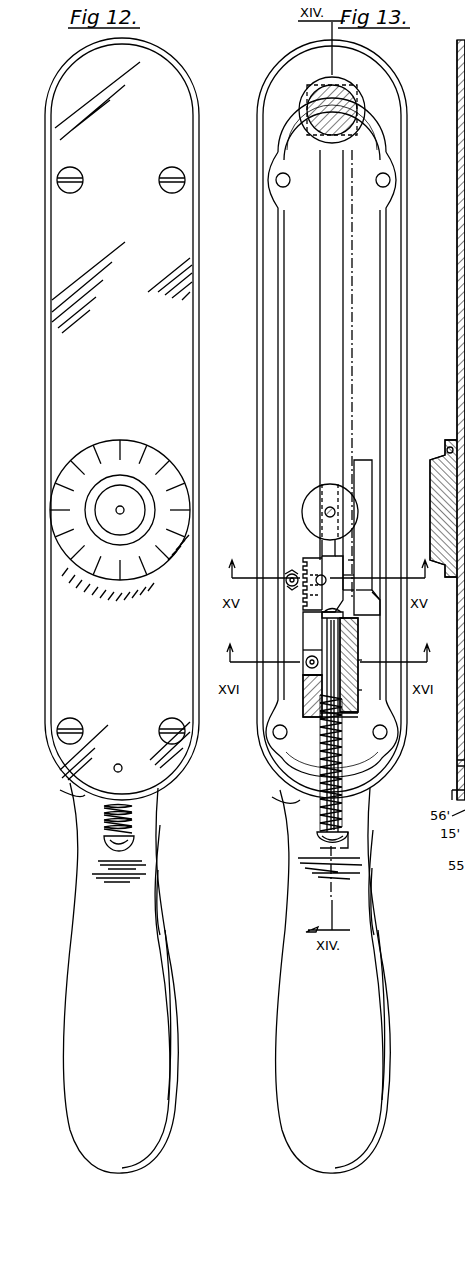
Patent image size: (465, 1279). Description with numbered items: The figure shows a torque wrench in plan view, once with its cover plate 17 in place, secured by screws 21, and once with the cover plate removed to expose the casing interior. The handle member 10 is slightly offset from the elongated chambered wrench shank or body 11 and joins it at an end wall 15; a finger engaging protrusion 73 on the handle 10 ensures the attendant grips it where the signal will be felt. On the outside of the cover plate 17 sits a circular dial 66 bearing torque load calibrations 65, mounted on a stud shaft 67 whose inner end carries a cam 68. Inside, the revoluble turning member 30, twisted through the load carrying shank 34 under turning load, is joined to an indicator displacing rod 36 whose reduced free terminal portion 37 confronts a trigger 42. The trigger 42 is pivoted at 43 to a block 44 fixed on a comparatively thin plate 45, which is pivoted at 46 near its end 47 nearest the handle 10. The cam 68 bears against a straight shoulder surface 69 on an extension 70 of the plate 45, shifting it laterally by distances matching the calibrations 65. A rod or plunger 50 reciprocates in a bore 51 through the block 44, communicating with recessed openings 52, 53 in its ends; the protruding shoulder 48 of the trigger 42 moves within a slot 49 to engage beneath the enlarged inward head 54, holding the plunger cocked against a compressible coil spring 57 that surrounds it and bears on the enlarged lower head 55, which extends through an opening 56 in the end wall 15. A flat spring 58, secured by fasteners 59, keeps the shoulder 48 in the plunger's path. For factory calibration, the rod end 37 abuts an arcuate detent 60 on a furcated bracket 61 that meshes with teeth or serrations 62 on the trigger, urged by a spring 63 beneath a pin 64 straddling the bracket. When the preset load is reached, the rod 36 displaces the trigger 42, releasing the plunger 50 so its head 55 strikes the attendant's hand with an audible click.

In FIG. 12, the handle member 10 is at (60, 966).
In FIG. 13, the handle member 10 is at (266, 1000).
In FIG. 13, the elongated chambered wrench shank or body 11 is at (232, 367).
In FIG. 12, the end wall 15 is at (82, 798).
In FIG. 13, the end wall 15 is at (300, 800).
In FIG. 12, the cover plate 17 is at (172, 315).
In FIG. 13, the cover plate 17 is at (457, 252).
In FIG. 12, the screws 21 is at (182, 168).
In FIG. 13, the revoluble turning member 30 is at (362, 106).
In FIG. 13, the load carrying shank 34 is at (352, 95).
In FIG. 13, the indicator displacing rod 36 is at (330, 400).
In FIG. 13, the free terminal portion 37 is at (340, 560).
In FIG. 13, the trigger 42 is at (303, 575).
In FIG. 13, the pivot 43 is at (308, 658).
In FIG. 13, the block 44 is at (360, 640).
In FIG. 13, the comparatively thin plate 45 is at (380, 600).
In FIG. 12, the pivot 46 is at (122, 770).
In FIG. 13, the pivot 46 is at (455, 775).
In FIG. 13, the end 47 is at (457, 760).
In FIG. 13, the protruding shoulder 48 is at (303, 592).
In FIG. 13, the slot 49 is at (303, 640).
In FIG. 13, the rod or plunger 50 is at (358, 660).
In FIG. 13, the bore 51 is at (358, 690).
In FIG. 13, the recessed opening 52 is at (344, 616).
In FIG. 13, the recessed opening 53 is at (358, 712).
In FIG. 13, the enlarged inward head 54 is at (348, 590).
In FIG. 12, the enlarged lower head 55 is at (106, 838).
In FIG. 13, the enlarged lower head 55 is at (318, 840).
In FIG. 13, the opening 56 is at (327, 810).
In FIG. 12, the compressible coil spring 57 is at (104, 816).
In FIG. 13, the compressible coil spring 57 is at (343, 816).
In FIG. 13, the flat spring 58 is at (303, 652).
In FIG. 13, the fasteners 59 is at (303, 680).
In FIG. 13, the arcuate detent 60 is at (345, 575).
In FIG. 13, the furcated bracket 61 is at (290, 573).
In FIG. 13, the teeth or serrations 62 is at (292, 586).
In FIG. 13, the spring 63 is at (310, 560).
In FIG. 13, the pin 64 is at (287, 573).
In FIG. 12, the torque load calibrations 65 is at (100, 468).
In FIG. 12, the circular dial 66 is at (128, 462).
In FIG. 13, the circular dial 66 is at (450, 440).
In FIG. 12, the stud shaft 67 is at (124, 505).
In FIG. 13, the stud shaft 67 is at (334, 505).
In FIG. 13, the cam 68 is at (338, 485).
In FIG. 13, the straight shoulder surface 69 is at (348, 500).
In FIG. 13, the extension 70 is at (358, 515).
In FIG. 12, the finger engaging protrusion 73 is at (100, 874).
In FIG. 13, the finger engaging protrusion 73 is at (305, 872).